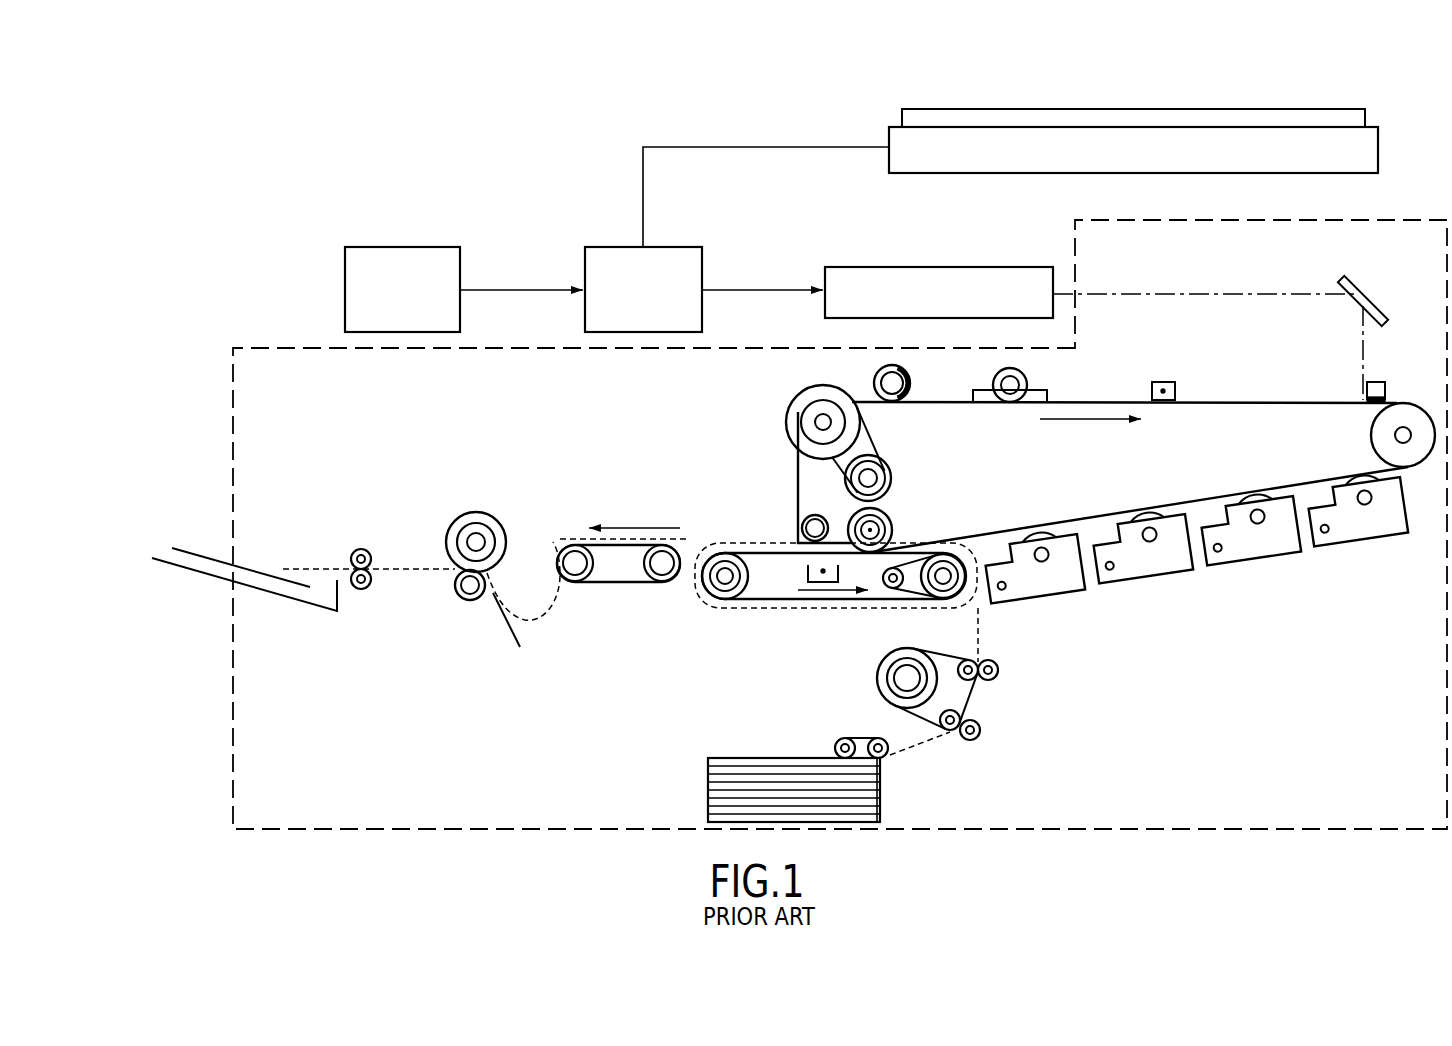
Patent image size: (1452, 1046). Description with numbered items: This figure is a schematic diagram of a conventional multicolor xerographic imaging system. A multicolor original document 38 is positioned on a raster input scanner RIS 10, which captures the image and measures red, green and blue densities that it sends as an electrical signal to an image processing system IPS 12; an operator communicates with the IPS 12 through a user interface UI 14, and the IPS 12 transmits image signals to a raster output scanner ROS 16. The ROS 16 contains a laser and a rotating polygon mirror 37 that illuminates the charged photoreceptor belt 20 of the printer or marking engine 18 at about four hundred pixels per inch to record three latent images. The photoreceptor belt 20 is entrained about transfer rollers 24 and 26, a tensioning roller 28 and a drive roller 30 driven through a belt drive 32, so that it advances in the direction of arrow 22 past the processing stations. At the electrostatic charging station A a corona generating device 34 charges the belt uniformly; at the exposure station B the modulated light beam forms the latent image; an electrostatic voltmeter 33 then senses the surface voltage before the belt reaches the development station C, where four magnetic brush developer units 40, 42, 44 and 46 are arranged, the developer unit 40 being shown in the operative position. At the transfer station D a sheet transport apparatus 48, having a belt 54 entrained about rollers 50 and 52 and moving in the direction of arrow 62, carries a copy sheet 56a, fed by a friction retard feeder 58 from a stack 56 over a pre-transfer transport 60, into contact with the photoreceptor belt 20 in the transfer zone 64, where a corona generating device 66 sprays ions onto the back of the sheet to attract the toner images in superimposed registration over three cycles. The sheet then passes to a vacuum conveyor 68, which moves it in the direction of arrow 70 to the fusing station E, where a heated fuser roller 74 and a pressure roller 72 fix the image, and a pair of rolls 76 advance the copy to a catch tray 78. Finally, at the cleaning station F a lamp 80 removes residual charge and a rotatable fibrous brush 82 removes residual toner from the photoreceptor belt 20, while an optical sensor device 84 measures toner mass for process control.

The raster input scanner 10 is at (1058, 100).
The image processing system 12 is at (608, 242).
The user interface 14 is at (405, 242).
The raster output scanner 16 is at (850, 262).
The printer or marking engine 18 is at (1422, 212).
The photoreceptor belt 20 is at (1272, 401).
The arrow 22 is at (1080, 421).
The transfer roller 24 is at (804, 522).
The transfer roller 26 is at (882, 512).
The tensioning roller 28 is at (1372, 436).
The drive roller 30 is at (805, 410).
The belt drive 32 is at (884, 462).
The electrostatic voltmeter 33 is at (1389, 385).
The corona generating device 34 is at (1184, 394).
The polygon mirror 37 is at (1368, 300).
The multicolor original document 38 is at (1262, 123).
The developer unit 40 is at (1353, 535).
The developer unit 42 is at (1248, 552).
The developer unit 44 is at (1138, 572).
The developer unit 46 is at (1030, 590).
The sheet transport apparatus 48 is at (783, 615).
The roller 50 is at (715, 592).
The roller 52 is at (945, 600).
The belt 54 is at (743, 552).
The stack 56 is at (740, 757).
The copy sheet 56a is at (193, 553).
The friction retard feeder 58 is at (852, 738).
The pre-transfer transport 60 is at (976, 698).
The arrow 62 is at (822, 602).
The transfer zone 64 is at (906, 530).
The corona generating device 66 is at (807, 567).
The vacuum conveyor 68 is at (620, 582).
The arrow 70 is at (636, 528).
The pressure roller 72 is at (460, 598).
The fuser roller 74 is at (475, 513).
The pair of rolls 76 is at (357, 550).
The catch tray 78 is at (298, 607).
The lamp 80 is at (915, 380).
The fibrous brush 82 is at (1030, 378).
The optical sensor device 84 is at (984, 548).
The electrostatic charging station A is at (1145, 392).
The exposure station B is at (1357, 392).
The development station C is at (1218, 636).
The transfer station D is at (832, 516).
The fusing station E is at (458, 508).
The cleaning station F is at (1005, 410).